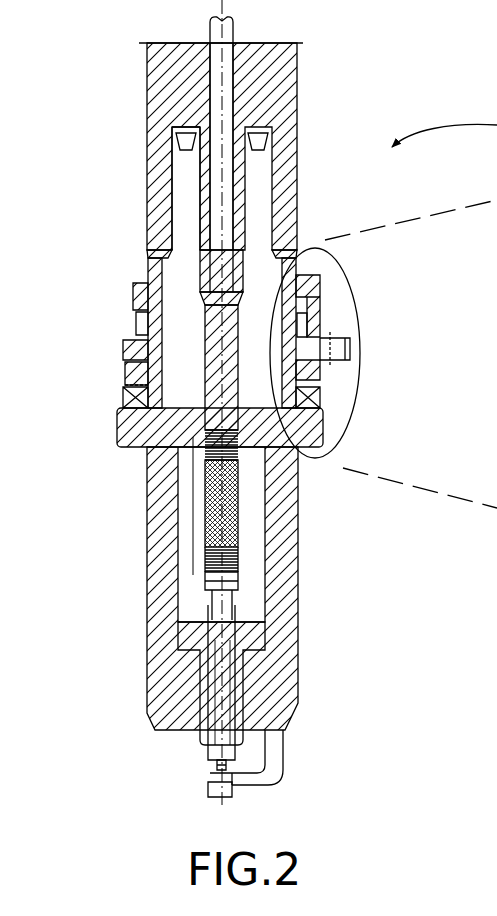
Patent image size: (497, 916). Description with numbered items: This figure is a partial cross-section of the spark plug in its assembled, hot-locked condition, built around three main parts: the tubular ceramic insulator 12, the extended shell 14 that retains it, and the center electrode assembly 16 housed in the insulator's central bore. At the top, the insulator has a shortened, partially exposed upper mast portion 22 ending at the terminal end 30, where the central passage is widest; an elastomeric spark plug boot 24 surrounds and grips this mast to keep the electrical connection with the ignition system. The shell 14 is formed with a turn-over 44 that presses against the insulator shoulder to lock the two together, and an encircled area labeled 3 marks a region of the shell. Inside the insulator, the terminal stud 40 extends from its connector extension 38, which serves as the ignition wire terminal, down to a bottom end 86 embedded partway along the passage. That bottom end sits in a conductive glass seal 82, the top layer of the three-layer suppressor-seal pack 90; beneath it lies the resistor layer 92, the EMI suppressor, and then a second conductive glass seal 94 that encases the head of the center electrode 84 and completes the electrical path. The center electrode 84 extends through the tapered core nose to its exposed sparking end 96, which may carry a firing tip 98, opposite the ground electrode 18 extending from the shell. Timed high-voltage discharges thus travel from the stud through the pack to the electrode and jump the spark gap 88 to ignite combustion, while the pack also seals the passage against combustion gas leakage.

The detail region circle 3 is at (362, 308).
The insulator 12 is at (272, 140).
The extended shell 14 is at (330, 422).
The center electrode assembly 16 is at (247, 607).
The ground electrode 18 is at (232, 790).
The upper mast portion 22 is at (147, 288).
The elastomeric spark plug boot 24 is at (272, 42).
The terminal end 30 is at (188, 128).
The connector extension 38 is at (227, 117).
The terminal stud 40 is at (243, 246).
The turn-over 44 is at (148, 250).
The conductive glass seal 82 is at (297, 500).
The center electrode 84 is at (200, 645).
The bottom end 86 is at (212, 403).
The spark gap 88 is at (272, 765).
The suppressor-seal pack 90 is at (200, 528).
The resistor layer 92 is at (238, 578).
The second conductive glass seal 94 is at (203, 563).
The sparking end 96 is at (212, 772).
The firing tip 98 is at (215, 765).